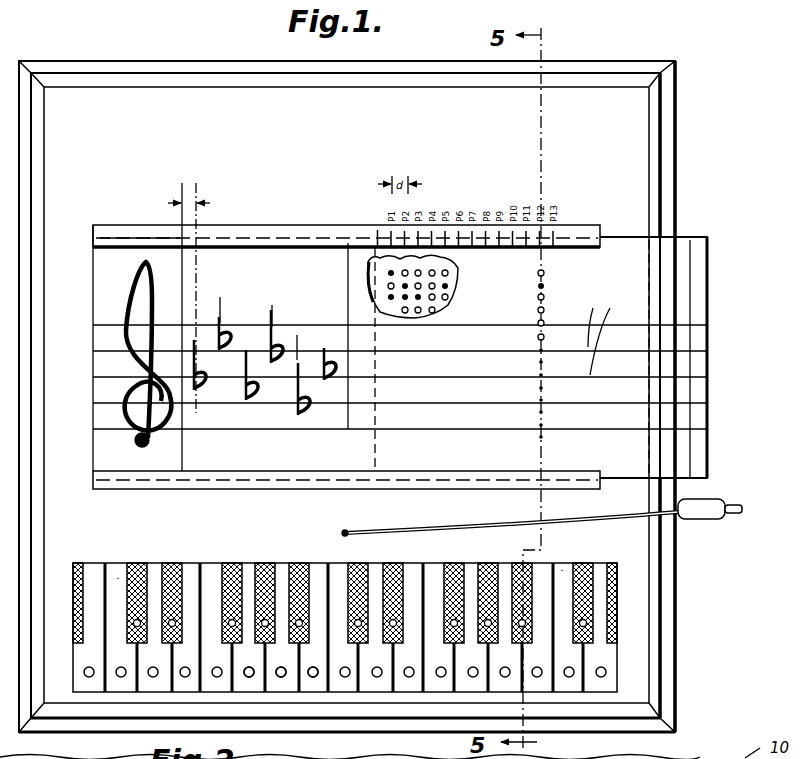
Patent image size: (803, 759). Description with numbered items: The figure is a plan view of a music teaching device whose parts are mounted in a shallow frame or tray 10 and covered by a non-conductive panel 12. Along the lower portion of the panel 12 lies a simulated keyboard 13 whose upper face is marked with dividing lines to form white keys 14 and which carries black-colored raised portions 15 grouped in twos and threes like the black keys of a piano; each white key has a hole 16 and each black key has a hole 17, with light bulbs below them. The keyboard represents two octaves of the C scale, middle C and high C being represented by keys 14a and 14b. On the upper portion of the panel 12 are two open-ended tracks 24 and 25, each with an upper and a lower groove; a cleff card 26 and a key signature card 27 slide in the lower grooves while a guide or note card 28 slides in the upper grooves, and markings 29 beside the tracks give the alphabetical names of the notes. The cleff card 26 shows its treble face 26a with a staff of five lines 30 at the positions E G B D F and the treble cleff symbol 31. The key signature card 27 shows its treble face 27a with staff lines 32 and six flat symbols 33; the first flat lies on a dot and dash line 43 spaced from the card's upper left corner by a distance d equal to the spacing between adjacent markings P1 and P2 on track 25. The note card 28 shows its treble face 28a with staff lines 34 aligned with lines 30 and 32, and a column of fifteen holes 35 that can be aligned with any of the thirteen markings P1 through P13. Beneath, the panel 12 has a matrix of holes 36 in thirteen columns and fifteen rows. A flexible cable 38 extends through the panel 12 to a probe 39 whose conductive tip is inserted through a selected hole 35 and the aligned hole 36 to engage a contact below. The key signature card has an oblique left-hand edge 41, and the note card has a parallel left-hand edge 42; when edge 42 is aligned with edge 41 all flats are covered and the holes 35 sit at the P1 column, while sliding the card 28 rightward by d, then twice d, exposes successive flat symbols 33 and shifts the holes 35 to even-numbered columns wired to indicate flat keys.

The frame 10 is at (662, 136).
The panel 12 is at (608, 100).
The simulated keyboard 13 is at (209, 575).
The keys 14 is at (185, 678).
The key 14a is at (118, 575).
The key 14b is at (562, 568).
The raised portions 15 is at (172, 566).
The hole 16 is at (313, 678).
The hole 17 is at (297, 618).
The track 24 is at (462, 490).
The track 25 is at (577, 243).
The cleff card 26 is at (153, 243).
The treble face 26a is at (107, 247).
The key signature card 27 is at (251, 243).
The treble face 27a is at (308, 262).
The note card 28 is at (686, 236).
The treble face 28a is at (702, 255).
The markings 29 is at (78, 360).
The staff of five lines 30 is at (110, 348).
The treble cleff symbol 31 is at (140, 300).
The staff lines 32 is at (316, 345).
The flat symbols 33 is at (262, 330).
The staff lines 34 is at (600, 331).
The holes 35 is at (538, 323).
The matrix of holes 36 is at (448, 276).
The flexible cable 38 is at (612, 525).
The probe 39 is at (708, 520).
The oblique left-hand edge 41 is at (184, 310).
The left-hand edge 42 is at (347, 320).
The dot and dash line 43 is at (211, 203).